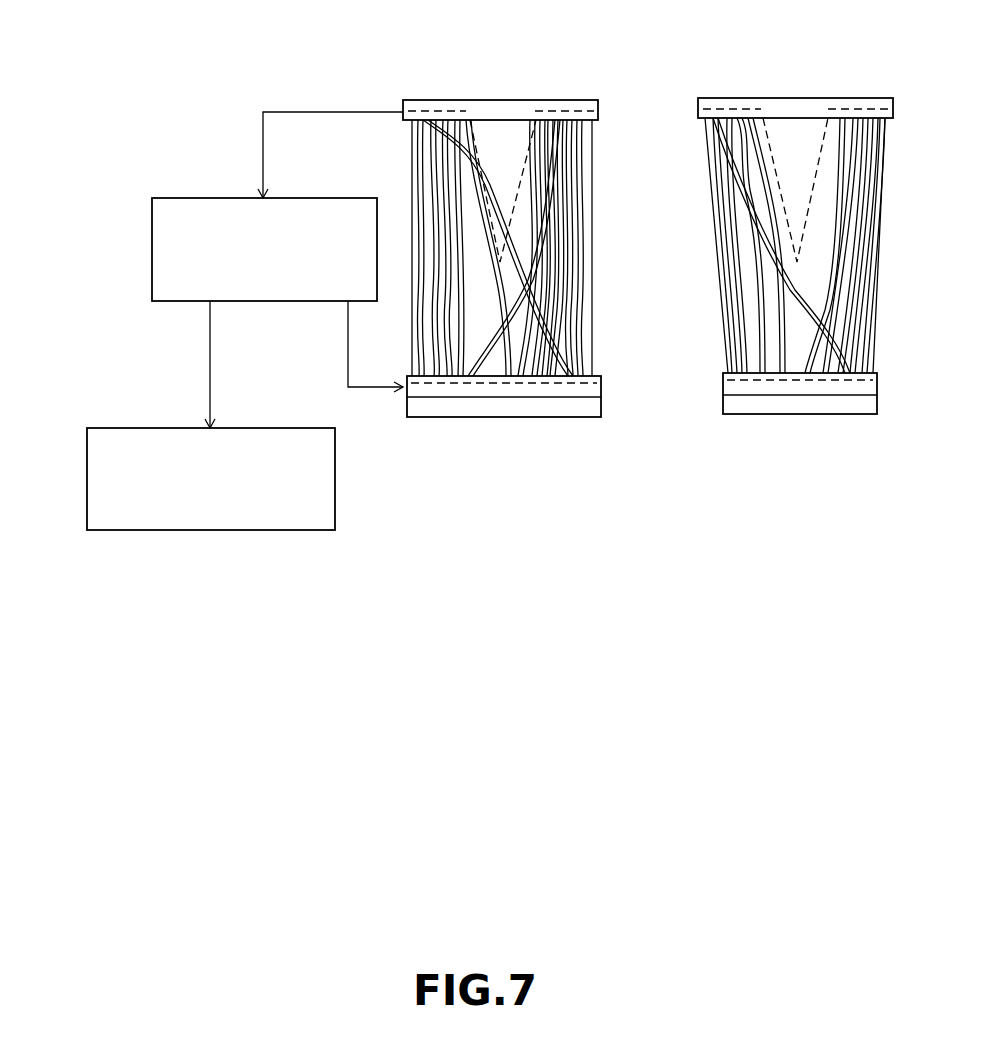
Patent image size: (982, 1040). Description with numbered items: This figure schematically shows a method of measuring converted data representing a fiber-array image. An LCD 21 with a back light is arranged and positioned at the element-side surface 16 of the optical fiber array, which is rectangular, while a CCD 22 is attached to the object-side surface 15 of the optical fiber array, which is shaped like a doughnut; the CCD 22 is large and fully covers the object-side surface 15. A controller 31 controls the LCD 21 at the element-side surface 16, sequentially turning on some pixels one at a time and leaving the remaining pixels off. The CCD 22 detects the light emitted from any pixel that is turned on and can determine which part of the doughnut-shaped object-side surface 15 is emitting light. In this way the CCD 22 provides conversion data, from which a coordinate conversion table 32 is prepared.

The object-side surface 15 is at (556, 125).
The element-side surface 16 is at (775, 368).
The LCD with a back light 21 is at (722, 384).
The CCD 22 is at (602, 105).
The controller 31 is at (216, 198).
The coordinate conversion table 32 is at (163, 428).